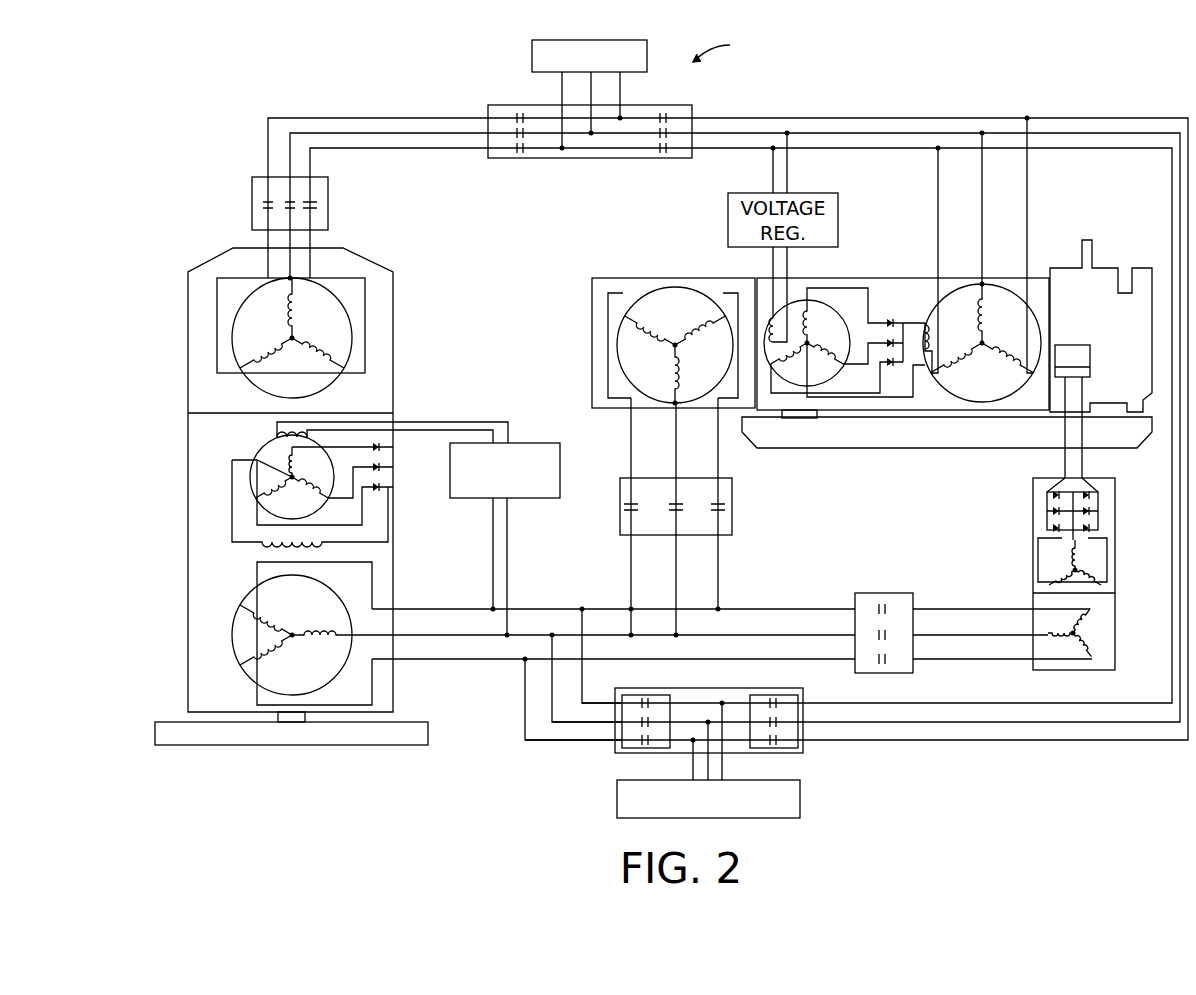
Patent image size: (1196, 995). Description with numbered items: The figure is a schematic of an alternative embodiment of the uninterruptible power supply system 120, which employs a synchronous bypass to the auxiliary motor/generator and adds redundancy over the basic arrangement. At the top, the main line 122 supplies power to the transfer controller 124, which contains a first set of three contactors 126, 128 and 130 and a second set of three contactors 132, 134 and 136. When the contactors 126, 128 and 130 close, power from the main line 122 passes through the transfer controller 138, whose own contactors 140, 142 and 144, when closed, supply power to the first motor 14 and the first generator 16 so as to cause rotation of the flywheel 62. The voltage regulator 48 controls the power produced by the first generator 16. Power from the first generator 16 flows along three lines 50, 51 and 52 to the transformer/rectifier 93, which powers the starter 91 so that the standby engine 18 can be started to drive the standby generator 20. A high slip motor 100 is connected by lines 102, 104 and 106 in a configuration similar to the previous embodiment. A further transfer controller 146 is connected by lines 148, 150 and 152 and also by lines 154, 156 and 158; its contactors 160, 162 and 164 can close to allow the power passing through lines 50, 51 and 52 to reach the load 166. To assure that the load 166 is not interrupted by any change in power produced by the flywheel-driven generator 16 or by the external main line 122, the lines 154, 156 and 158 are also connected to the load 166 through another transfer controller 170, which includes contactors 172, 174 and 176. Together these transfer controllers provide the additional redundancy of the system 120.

The first motor 14 is at (393, 302).
The first generator 16 is at (393, 548).
The standby engine 18 is at (1102, 267).
The standby generator 20 is at (882, 277).
The voltage regulator 48 is at (528, 442).
The line 50 is at (428, 608).
The line 51 is at (413, 637).
The line 52 is at (443, 662).
The flywheel 62 is at (183, 747).
The starter 91 is at (1090, 353).
The transformer/rectifier 93 is at (1115, 572).
The high slip motor 100 is at (592, 322).
The line 102 is at (628, 457).
The line 104 is at (676, 442).
The line 106 is at (721, 458).
The system 120 is at (728, 48).
The main line 122 is at (608, 40).
The transfer controller 124 is at (563, 160).
The contactor 126 is at (512, 116).
The contactor 128 is at (527, 130).
The contactor 130 is at (513, 150).
The contactor 132 is at (660, 115).
The contactor 134 is at (668, 130).
The contactor 136 is at (658, 153).
The transfer controller 138 is at (328, 182).
The contactor 140 is at (267, 205).
The contactor 142 is at (286, 201).
The contactor 144 is at (318, 216).
The transfer controller 146 is at (685, 688).
The line 148 is at (523, 732).
The line 150 is at (550, 695).
The line 152 is at (577, 673).
The line 154 is at (832, 132).
The line 156 is at (880, 118).
The line 158 is at (855, 150).
The contactor 160 is at (652, 698).
The contactor 162 is at (640, 713).
The contactor 164 is at (642, 742).
The load 166 is at (802, 792).
The transfer controller 170 is at (802, 698).
The contactor 172 is at (772, 700).
The contactor 174 is at (780, 715).
The contactor 176 is at (778, 743).